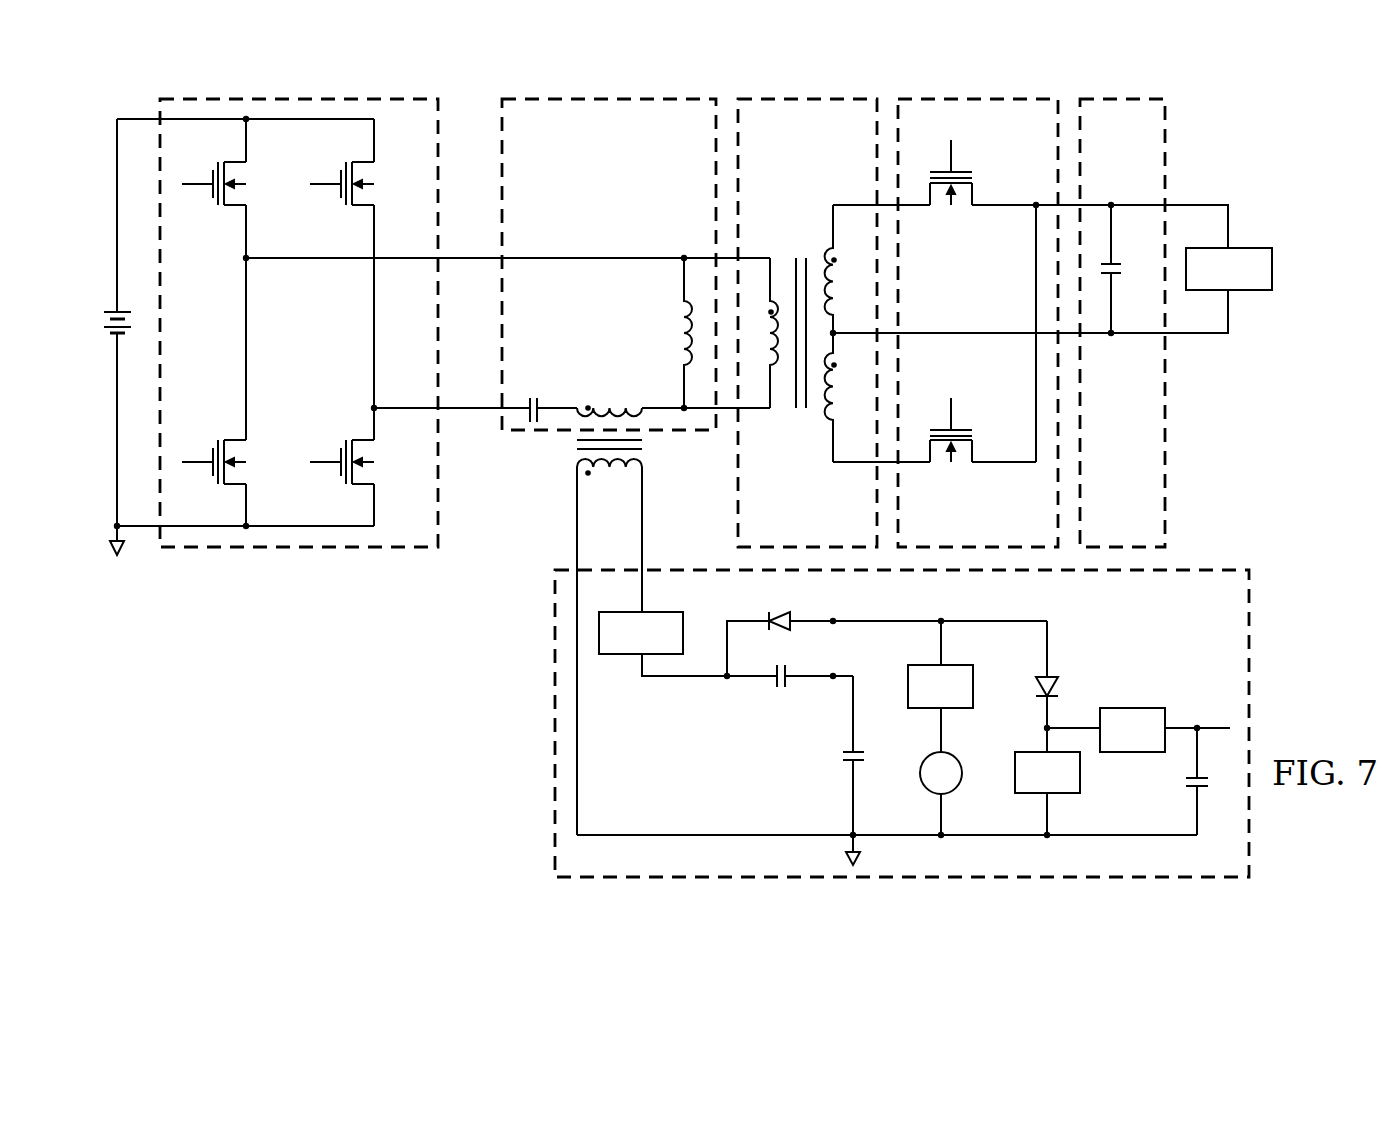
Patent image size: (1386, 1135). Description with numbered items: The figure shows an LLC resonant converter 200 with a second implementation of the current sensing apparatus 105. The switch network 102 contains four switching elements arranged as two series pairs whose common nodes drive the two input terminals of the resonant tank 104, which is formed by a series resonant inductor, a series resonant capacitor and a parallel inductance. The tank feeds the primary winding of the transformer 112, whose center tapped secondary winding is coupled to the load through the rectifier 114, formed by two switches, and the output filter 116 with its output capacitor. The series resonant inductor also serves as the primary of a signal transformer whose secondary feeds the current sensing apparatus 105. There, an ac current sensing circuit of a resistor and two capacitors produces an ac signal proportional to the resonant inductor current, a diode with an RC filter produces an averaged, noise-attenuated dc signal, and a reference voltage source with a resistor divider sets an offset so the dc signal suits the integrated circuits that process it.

The resonant converter 200 is at (1270, 156).
The switch network 102 is at (225, 326).
The resonant tank 104 is at (630, 143).
The transformer 112 is at (827, 143).
The rectifier 114 is at (1024, 143).
The output filter 116 is at (1143, 143).
The current sensing apparatus 105 is at (1174, 648).